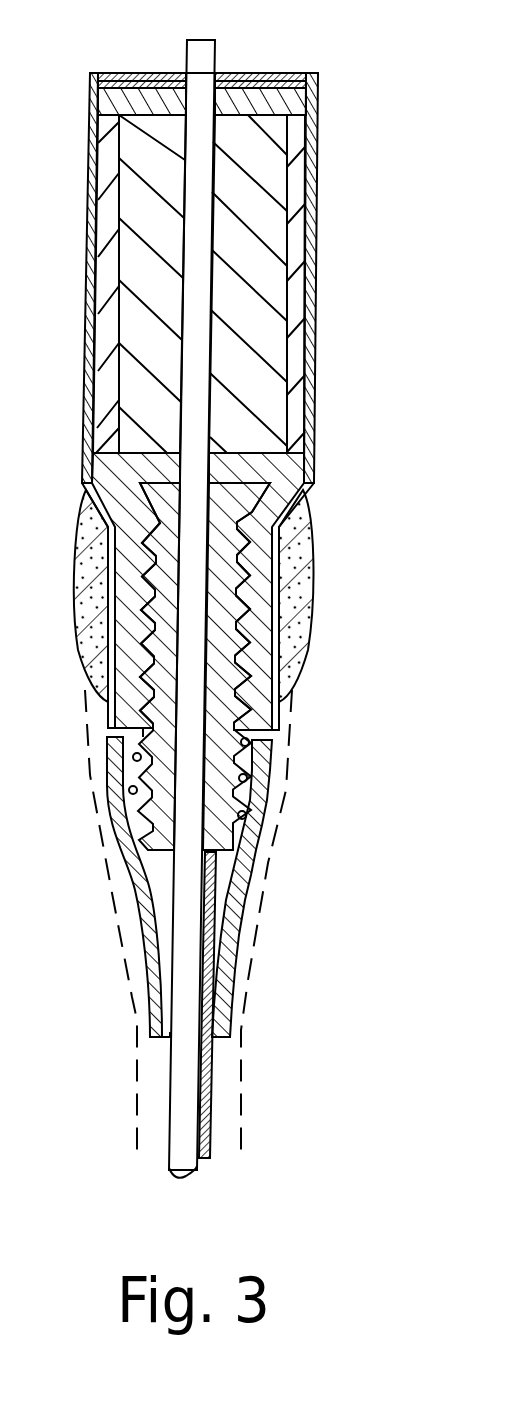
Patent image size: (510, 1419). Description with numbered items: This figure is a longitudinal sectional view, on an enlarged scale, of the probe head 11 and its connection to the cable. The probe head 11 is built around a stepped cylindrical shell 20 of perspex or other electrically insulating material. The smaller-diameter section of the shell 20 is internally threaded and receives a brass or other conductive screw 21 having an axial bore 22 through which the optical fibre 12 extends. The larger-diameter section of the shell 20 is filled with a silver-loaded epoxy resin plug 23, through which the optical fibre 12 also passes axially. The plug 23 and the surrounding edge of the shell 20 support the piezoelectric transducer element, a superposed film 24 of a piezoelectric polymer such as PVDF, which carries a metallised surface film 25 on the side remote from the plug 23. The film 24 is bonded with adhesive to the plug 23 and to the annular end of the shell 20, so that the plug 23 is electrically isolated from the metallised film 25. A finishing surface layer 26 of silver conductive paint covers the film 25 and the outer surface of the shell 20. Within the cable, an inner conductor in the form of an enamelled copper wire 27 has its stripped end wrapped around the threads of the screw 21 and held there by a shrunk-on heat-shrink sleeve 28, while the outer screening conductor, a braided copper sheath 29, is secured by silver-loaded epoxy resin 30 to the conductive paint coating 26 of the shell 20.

The probe head 11 is at (322, 195).
The optical fibre 12 is at (198, 55).
The stepped cylindrical shell 20 is at (293, 323).
The screw 21 is at (220, 610).
The axial bore 22 is at (293, 498).
The silver-loaded epoxy resin plug 23 is at (248, 372).
The piezoelectric film 24 is at (283, 107).
The metallised surface film 25 is at (255, 87).
The finishing surface layer of silver conductive paint 26 is at (310, 258).
The enamelled copper wire 27 is at (208, 1090).
The heat-shrink sleeve 28 is at (232, 888).
The braided copper sheath 29 is at (137, 1055).
The silver-loaded epoxy resin 30 is at (80, 632).